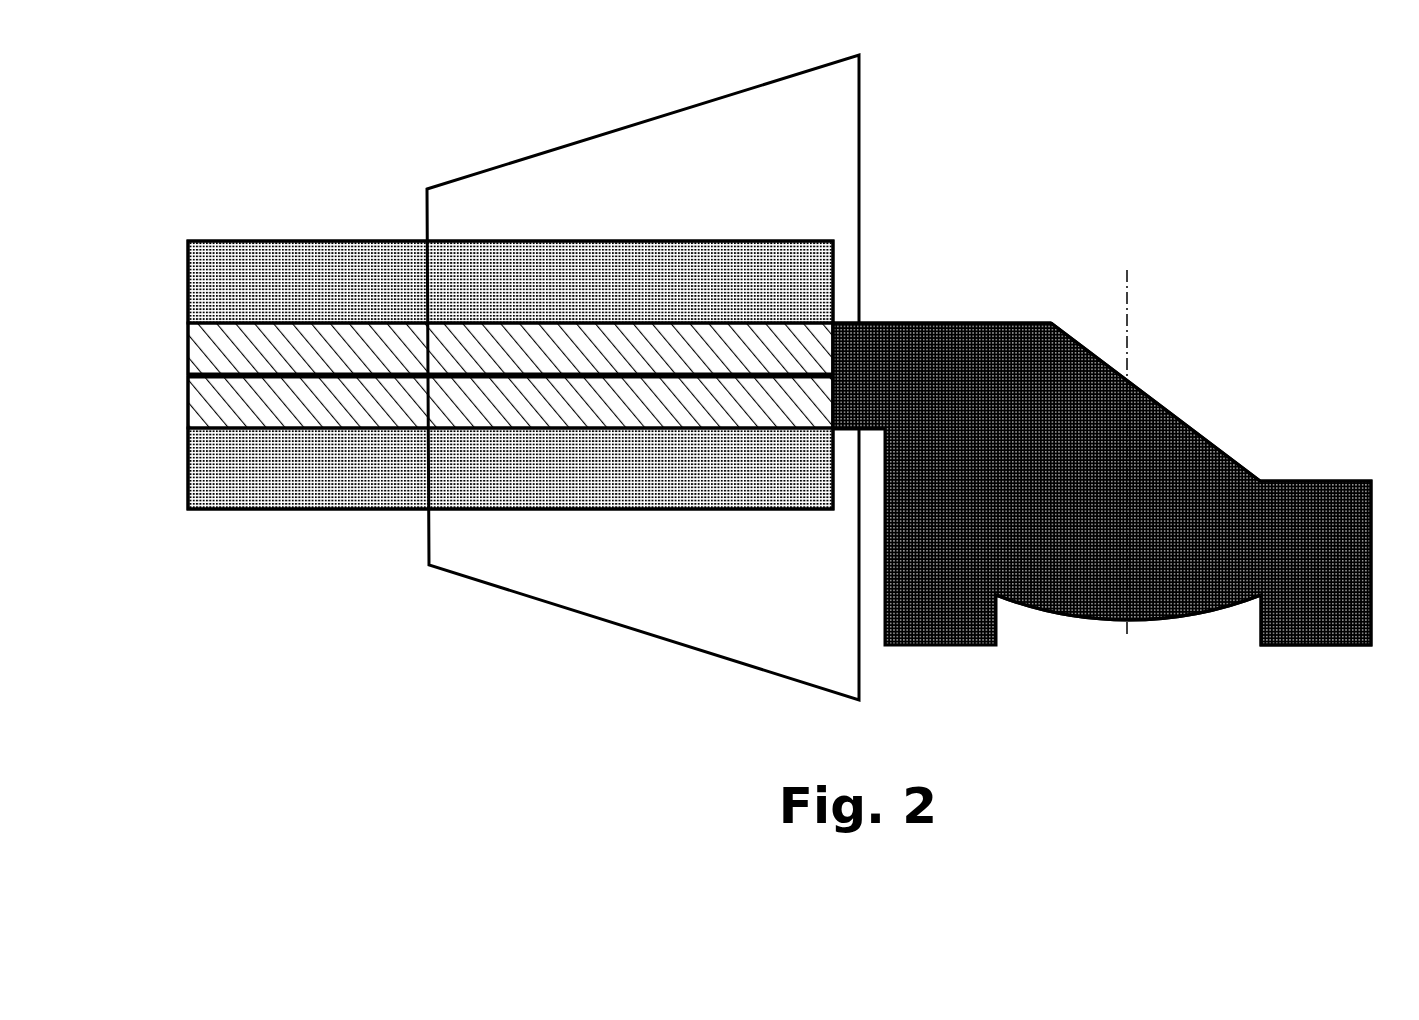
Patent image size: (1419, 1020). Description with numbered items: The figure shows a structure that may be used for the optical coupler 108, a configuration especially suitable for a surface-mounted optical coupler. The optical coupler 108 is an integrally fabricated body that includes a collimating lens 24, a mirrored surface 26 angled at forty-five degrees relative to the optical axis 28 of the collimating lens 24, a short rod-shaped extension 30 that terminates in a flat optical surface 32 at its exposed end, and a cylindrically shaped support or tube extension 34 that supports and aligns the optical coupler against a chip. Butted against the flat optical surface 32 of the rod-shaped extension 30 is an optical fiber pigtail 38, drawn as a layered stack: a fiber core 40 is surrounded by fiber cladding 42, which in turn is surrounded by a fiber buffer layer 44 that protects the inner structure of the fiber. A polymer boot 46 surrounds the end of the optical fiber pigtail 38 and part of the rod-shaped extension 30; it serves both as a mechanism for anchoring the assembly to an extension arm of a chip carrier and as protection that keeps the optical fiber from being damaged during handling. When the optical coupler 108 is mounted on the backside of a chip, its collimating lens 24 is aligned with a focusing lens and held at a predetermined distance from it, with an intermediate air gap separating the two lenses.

The collimating lens 24 is at (1150, 608).
The mirrored surface 26 is at (1137, 383).
The optical axis 28 is at (1119, 281).
The rod-shaped extension 30 is at (866, 315).
The flat optical surface 32 is at (826, 312).
The tube extension 34 is at (1363, 622).
The optical fiber pigtail 38 is at (270, 207).
The fiber core 40 is at (180, 370).
The fiber cladding 42 is at (180, 340).
The fiber buffer layer 44 is at (338, 503).
The polymer boot 46 is at (851, 128).
The optical coupler 108 is at (1228, 405).